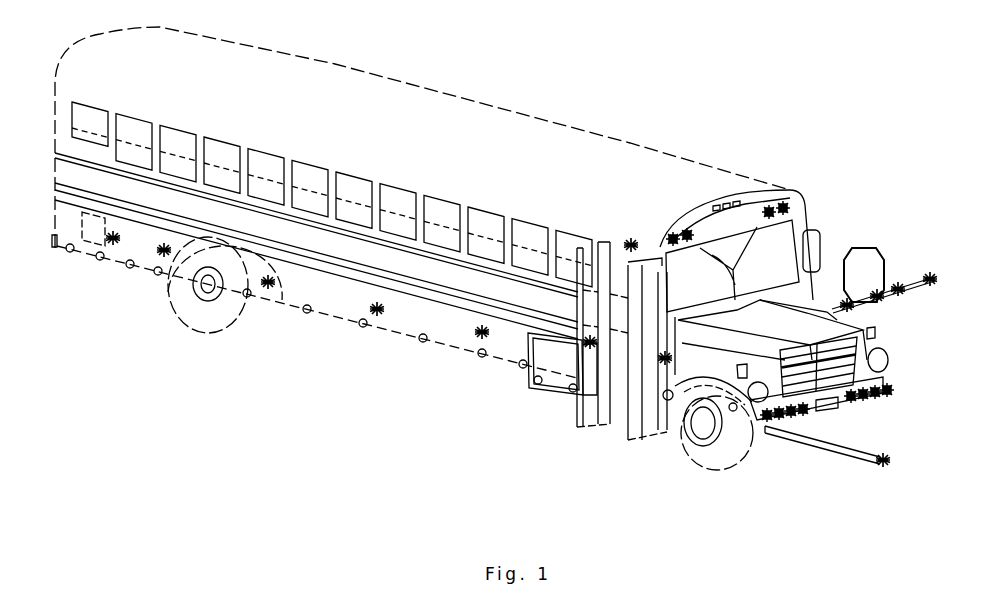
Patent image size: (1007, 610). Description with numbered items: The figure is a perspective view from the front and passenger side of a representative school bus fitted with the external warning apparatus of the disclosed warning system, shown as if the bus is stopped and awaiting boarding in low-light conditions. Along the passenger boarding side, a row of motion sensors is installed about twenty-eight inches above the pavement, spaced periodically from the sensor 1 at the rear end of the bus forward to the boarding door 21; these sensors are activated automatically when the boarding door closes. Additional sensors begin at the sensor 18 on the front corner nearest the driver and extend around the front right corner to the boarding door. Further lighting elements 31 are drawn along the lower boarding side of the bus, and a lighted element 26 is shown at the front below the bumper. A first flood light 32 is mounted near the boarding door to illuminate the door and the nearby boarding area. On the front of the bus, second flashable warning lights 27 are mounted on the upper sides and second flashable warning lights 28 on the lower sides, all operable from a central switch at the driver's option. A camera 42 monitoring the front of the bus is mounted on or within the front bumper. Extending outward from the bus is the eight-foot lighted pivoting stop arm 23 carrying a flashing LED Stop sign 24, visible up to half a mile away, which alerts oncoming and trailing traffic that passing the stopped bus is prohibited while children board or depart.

The sensor 1 is at (68, 250).
The side illumination devices 31 is at (113, 246).
The boarding door 21 is at (603, 243).
The first flood light 32 is at (638, 240).
The second flashable warning lights 27 is at (786, 192).
The LED Stop sign 24 is at (866, 246).
The lighted pivoting stop arm 23 is at (913, 278).
The sensor 18 is at (882, 377).
The second flashable warning lights 28 is at (868, 397).
The camera 42 is at (840, 402).
The light bar 26 is at (867, 457).